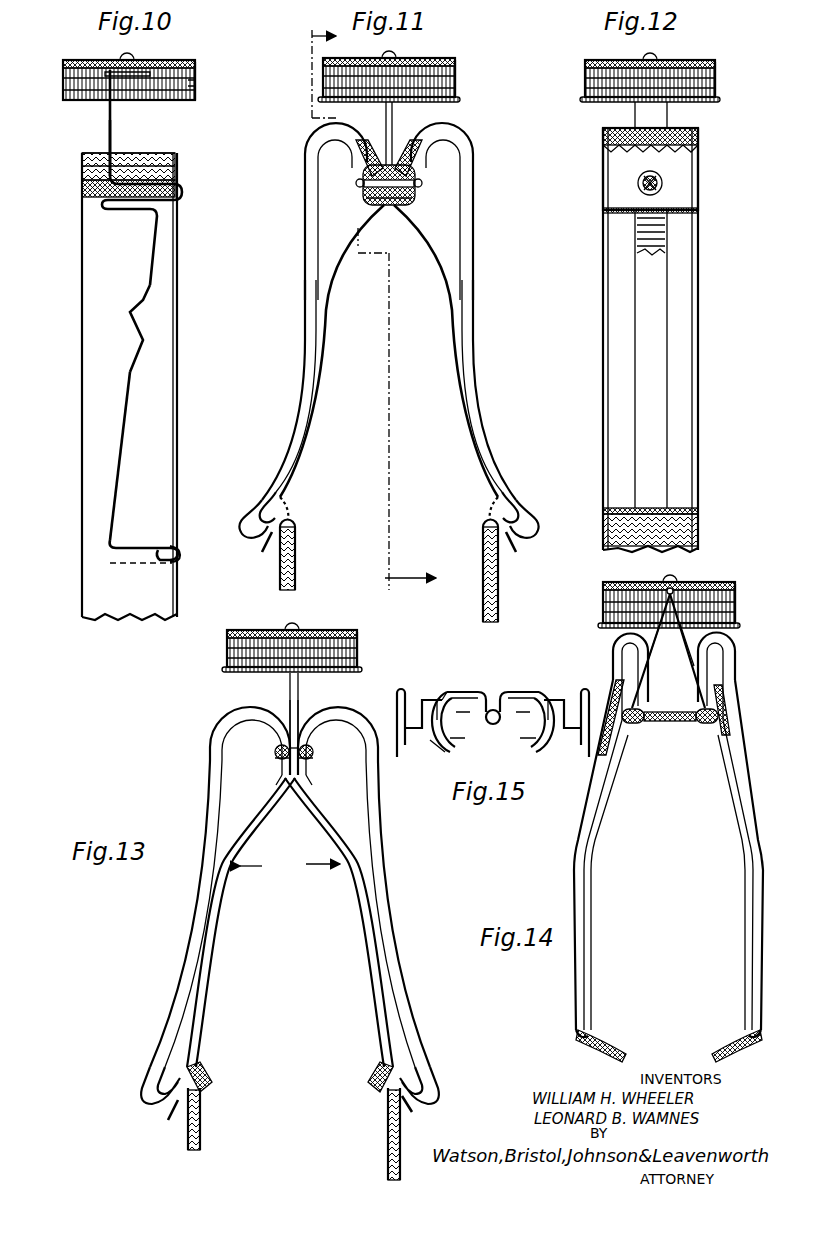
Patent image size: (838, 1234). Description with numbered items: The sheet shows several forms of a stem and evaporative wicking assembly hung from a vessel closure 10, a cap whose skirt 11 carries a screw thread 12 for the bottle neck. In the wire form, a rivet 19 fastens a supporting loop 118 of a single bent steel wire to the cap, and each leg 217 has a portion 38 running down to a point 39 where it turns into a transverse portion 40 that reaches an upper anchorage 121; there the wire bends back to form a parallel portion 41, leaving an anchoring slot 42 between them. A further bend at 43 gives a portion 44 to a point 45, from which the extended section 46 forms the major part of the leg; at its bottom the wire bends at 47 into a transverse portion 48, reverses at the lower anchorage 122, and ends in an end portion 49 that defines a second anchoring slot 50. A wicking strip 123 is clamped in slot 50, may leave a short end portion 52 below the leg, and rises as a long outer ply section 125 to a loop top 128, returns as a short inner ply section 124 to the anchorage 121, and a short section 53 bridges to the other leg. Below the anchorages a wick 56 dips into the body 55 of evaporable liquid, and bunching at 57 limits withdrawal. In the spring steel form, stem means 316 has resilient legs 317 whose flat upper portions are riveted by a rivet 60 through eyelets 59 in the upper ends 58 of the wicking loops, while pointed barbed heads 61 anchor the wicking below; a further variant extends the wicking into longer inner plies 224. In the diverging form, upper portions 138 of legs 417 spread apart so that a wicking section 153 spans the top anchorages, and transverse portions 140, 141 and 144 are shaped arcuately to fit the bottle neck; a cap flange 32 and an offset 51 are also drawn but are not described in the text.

In FIG. 10, the vessel closure 10 is at (197, 58).
In FIG. 11, the vessel closure 10 is at (458, 60).
In FIG. 12, the vessel closure 10 is at (716, 60).
In FIG. 13, the vessel closure 10 is at (358, 632).
In FIG. 14, the vessel closure 10 is at (735, 583).
In FIG. 10, the skirt 11 is at (197, 74).
In FIG. 11, the skirt 11 is at (458, 84).
In FIG. 12, the skirt 11 is at (718, 88).
In FIG. 13, the skirt 11 is at (360, 658).
In FIG. 14, the skirt 11 is at (738, 598).
In FIG. 10, the screw thread 12 is at (197, 86).
In FIG. 11, the screw thread 12 is at (363, 301).
In FIG. 10, the rivet 19 is at (130, 58).
In FIG. 11, the rivet 19 is at (390, 57).
In FIG. 12, the rivet 19 is at (657, 58).
In FIG. 13, the rivet 19 is at (300, 628).
In FIG. 14, the rivet 19 is at (676, 582).
In FIG. 10, the supporting loop 118 is at (150, 70).
In FIG. 15, the supporting loop 118 is at (491, 726).
In FIG. 14, the supporting loop 118 is at (650, 584).
In FIG. 10, the cap flange 32 is at (197, 99).
In FIG. 11, the cap flange 32 is at (318, 100).
In FIG. 12, the cap flange 32 is at (722, 99).
In FIG. 13, the cap flange 32 is at (292, 669).
In FIG. 14, the cap flange 32 is at (600, 624).
In FIG. 10, the downwardly extending portion 38 is at (113, 118).
In FIG. 14, the downwardly extending portion 38 is at (698, 688).
In FIG. 10, the leg 217 is at (112, 138).
In FIG. 10, the loop top 128 is at (165, 153).
In FIG. 11, the loop top 128 is at (310, 130).
In FIG. 12, the loop top 128 is at (700, 136).
In FIG. 13, the loop top 128 is at (232, 700).
In FIG. 14, the loop top 128 is at (616, 636).
In FIG. 10, the transverse portion 40 is at (158, 173).
In FIG. 10, the anchoring slot 42 is at (181, 186).
In FIG. 10, the upper anchorage 121 is at (185, 192).
In FIG. 11, the upper anchorage 121 is at (362, 184).
In FIG. 12, the upper anchorage 121 is at (637, 177).
In FIG. 13, the upper anchorage 121 is at (314, 746).
In FIG. 15, the upper anchorage 121 is at (454, 755).
In FIG. 14, the upper anchorage 121 is at (634, 728).
In FIG. 10, the inner ply section 124 is at (82, 158).
In FIG. 12, the inner ply section 124 is at (606, 183).
In FIG. 14, the inner ply section 124 is at (636, 656).
In FIG. 10, the bend point 39 is at (84, 180).
In FIG. 15, the bend point 39 is at (456, 690).
In FIG. 10, the short wicking section 53 is at (84, 197).
In FIG. 10, the reverse bend 43 is at (106, 205).
In FIG. 15, the reverse bend 43 is at (448, 688).
In FIG. 10, the transverse portion 41 is at (160, 203).
In FIG. 10, the wire portion 44 is at (128, 212).
In FIG. 15, the wire portion 44 is at (399, 756).
In FIG. 10, the bend point 45 is at (158, 230).
In FIG. 15, the bend point 45 is at (446, 745).
In FIG. 10, the wire offset 51 is at (135, 316).
In FIG. 10, the wicking strip 123 is at (180, 357).
In FIG. 11, the wicking strip 123 is at (304, 295).
In FIG. 12, the wicking strip 123 is at (701, 383).
In FIG. 13, the wicking strip 123 is at (186, 928).
In FIG. 14, the wicking strip 123 is at (758, 735).
In FIG. 10, the outer ply section 125 is at (160, 387).
In FIG. 11, the outer ply section 125 is at (306, 388).
In FIG. 12, the outer ply section 125 is at (684, 422).
In FIG. 13, the outer ply section 125 is at (180, 982).
In FIG. 14, the outer ply section 125 is at (752, 816).
In FIG. 10, the extended leg section 46 is at (132, 413).
In FIG. 11, the extended leg section 46 is at (322, 327).
In FIG. 12, the extended leg section 46 is at (653, 338).
In FIG. 13, the extended leg section 46 is at (226, 914).
In FIG. 15, the extended leg section 46 is at (420, 706).
In FIG. 14, the extended leg section 46 is at (596, 852).
In FIG. 10, the lower bend 47 is at (112, 552).
In FIG. 10, the transverse portion 48 is at (156, 546).
In FIG. 15, the transverse portion 48 is at (398, 703).
In FIG. 10, the anchoring slot 50 is at (164, 552).
In FIG. 10, the lower anchorage 122 is at (183, 556).
In FIG. 11, the lower anchorage 122 is at (296, 509).
In FIG. 12, the lower anchorage 122 is at (670, 506).
In FIG. 13, the lower anchorage 122 is at (210, 1070).
In FIG. 15, the lower anchorage 122 is at (401, 690).
In FIG. 14, the lower anchorage 122 is at (590, 1030).
In FIG. 10, the end portion 49 is at (165, 570).
In FIG. 15, the end portion 49 is at (404, 748).
In FIG. 10, the wick 56 is at (124, 612).
In FIG. 11, the wick 56 is at (296, 556).
In FIG. 12, the wick 56 is at (690, 540).
In FIG. 13, the wick 56 is at (202, 1134).
In FIG. 14, the wick 56 is at (714, 1046).
In FIG. 11, the bunching 57 is at (250, 512).
In FIG. 13, the bunching 57 is at (146, 1096).
In FIG. 11, the barbed head 61 is at (266, 548).
In FIG. 12, the barbed head 61 is at (700, 520).
In FIG. 13, the barbed head 61 is at (170, 1114).
In FIG. 11, the stem means 316 is at (408, 132).
In FIG. 12, the stem means 316 is at (632, 118).
In FIG. 13, the stem means 316 is at (288, 688).
In FIG. 11, the resilient leg 317 is at (358, 138).
In FIG. 12, the resilient leg 317 is at (668, 126).
In FIG. 13, the resilient leg 317 is at (308, 694).
In FIG. 11, the upper end of wicking 58 is at (370, 168).
In FIG. 12, the upper end of wicking 58 is at (610, 213).
In FIG. 13, the upper end of wicking 58 is at (274, 781).
In FIG. 11, the eyelet 59 is at (370, 200).
In FIG. 12, the eyelet 59 is at (660, 180).
In FIG. 13, the eyelet 59 is at (276, 756).
In FIG. 11, the rivet 60 is at (412, 183).
In FIG. 12, the rivet 60 is at (664, 188).
In FIG. 13, the rivet 60 is at (314, 754).
In FIG. 13, the body of evaporable liquid 55 is at (207, 992).
In FIG. 13, the inner ply 224 is at (290, 863).
In FIG. 15, the transverse portion 144 is at (438, 698).
In FIG. 15, the leg 417 is at (470, 690).
In FIG. 14, the leg 417 is at (650, 672).
In FIG. 15, the upper leg portion 138 is at (492, 690).
In FIG. 15, the transverse portion 140 is at (499, 707).
In FIG. 15, the transverse portion 141 is at (493, 727).
In FIG. 14, the wicking section 153 is at (670, 722).
In FIG. 14, the short end portion 52 is at (624, 1046).